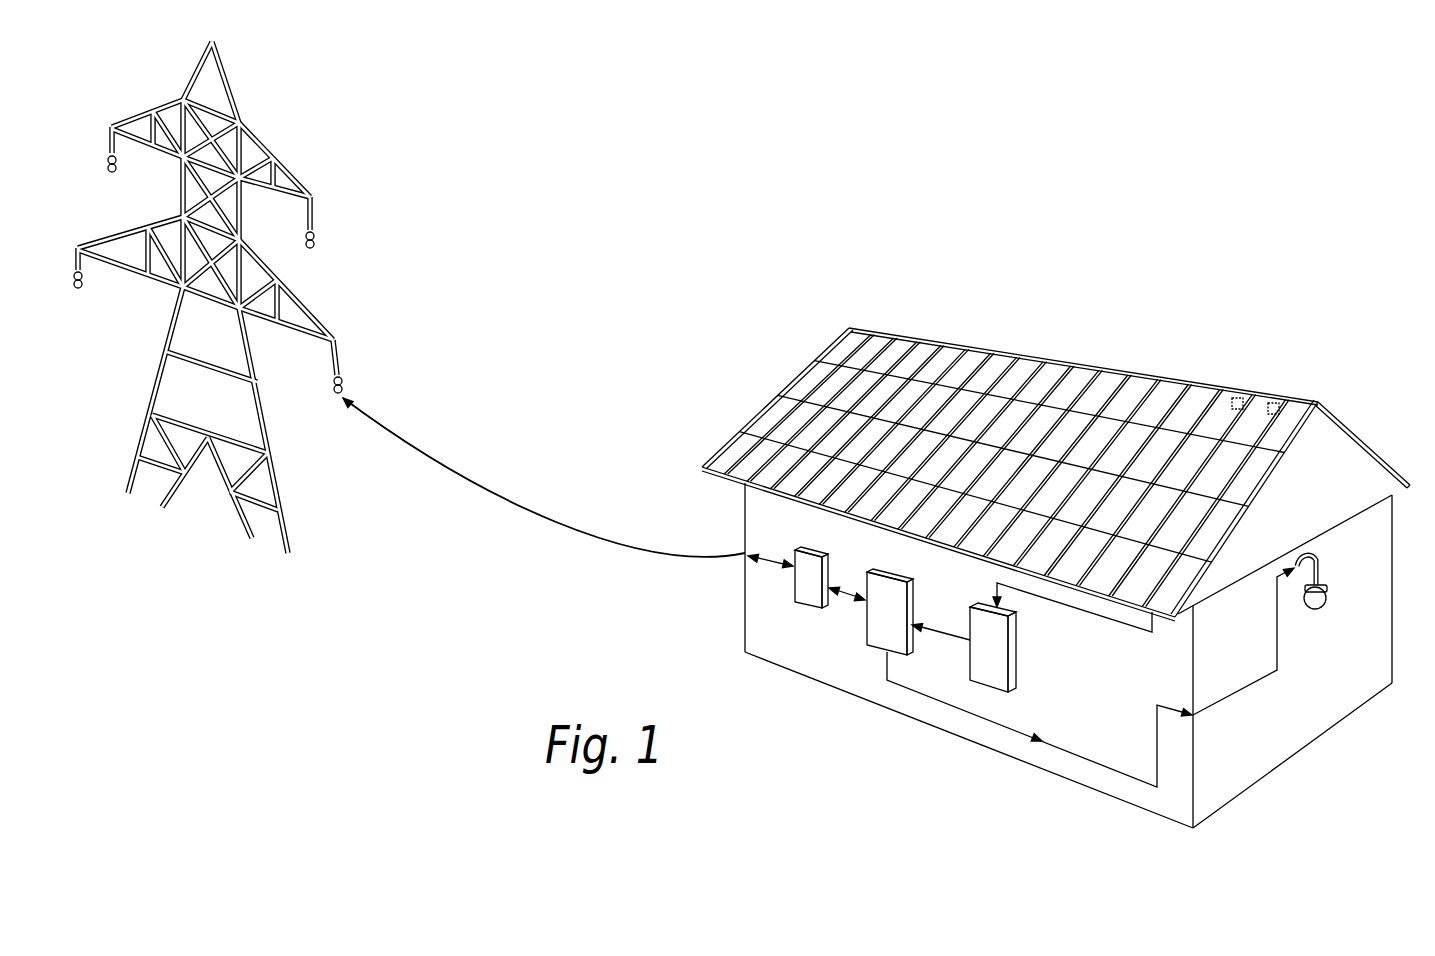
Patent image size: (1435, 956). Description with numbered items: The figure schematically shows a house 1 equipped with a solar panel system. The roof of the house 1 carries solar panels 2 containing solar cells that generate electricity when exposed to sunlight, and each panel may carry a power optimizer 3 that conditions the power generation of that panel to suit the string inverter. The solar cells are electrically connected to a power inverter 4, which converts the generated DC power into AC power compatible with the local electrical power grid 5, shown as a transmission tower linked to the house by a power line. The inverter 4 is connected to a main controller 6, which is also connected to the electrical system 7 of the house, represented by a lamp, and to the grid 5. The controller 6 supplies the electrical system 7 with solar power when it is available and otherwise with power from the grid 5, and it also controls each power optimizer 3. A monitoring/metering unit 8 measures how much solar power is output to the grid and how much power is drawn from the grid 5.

The house 1 is at (1364, 358).
The solar panels 2 is at (1078, 383).
The power optimizer 3 is at (1270, 403).
The power inverter 4 is at (993, 670).
The electrical power grid 5 is at (306, 183).
The main controller 6 is at (893, 637).
The electrical system 7 is at (1277, 630).
The monitoring/metering unit 8 is at (808, 598).